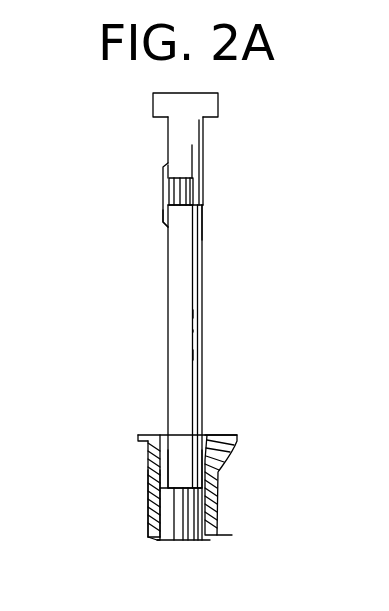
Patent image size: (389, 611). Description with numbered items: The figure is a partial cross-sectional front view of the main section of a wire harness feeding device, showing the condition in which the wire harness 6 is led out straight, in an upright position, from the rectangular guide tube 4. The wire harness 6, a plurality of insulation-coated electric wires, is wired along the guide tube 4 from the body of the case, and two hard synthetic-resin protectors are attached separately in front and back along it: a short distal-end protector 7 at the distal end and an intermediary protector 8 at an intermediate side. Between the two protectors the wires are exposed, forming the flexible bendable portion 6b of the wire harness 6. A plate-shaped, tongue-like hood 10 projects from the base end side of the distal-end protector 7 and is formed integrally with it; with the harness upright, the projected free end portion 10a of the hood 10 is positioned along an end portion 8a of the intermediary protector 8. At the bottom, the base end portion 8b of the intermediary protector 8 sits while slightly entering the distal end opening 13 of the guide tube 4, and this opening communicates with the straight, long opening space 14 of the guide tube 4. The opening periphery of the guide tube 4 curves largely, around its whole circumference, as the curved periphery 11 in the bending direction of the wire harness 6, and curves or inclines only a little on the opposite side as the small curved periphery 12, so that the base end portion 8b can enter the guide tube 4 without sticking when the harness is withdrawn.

The guide tube 4 is at (148, 483).
The wire harness 6 is at (167, 505).
The bendable portion 6b is at (192, 191).
The distal-end protector 7 is at (193, 144).
The intermediary protector 8 is at (187, 322).
The end portion of the intermediary protector 8a is at (203, 225).
The base end portion of the intermediary protector 8b is at (183, 458).
The hood 10 is at (163, 192).
The base end portion of the hood 10a is at (163, 222).
The curved periphery 11 is at (218, 455).
The small curved periphery 12 is at (148, 447).
The distal end opening 13 is at (158, 435).
The opening space 14 is at (170, 517).